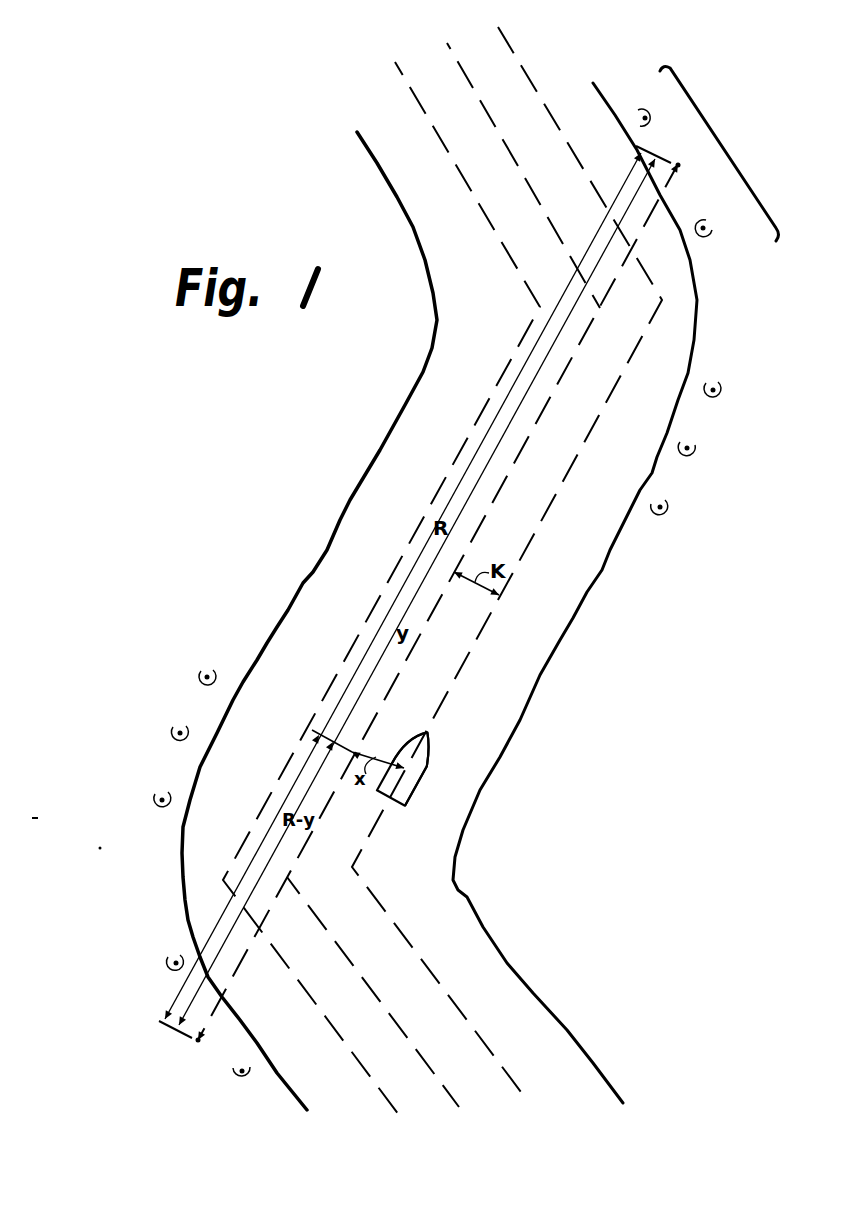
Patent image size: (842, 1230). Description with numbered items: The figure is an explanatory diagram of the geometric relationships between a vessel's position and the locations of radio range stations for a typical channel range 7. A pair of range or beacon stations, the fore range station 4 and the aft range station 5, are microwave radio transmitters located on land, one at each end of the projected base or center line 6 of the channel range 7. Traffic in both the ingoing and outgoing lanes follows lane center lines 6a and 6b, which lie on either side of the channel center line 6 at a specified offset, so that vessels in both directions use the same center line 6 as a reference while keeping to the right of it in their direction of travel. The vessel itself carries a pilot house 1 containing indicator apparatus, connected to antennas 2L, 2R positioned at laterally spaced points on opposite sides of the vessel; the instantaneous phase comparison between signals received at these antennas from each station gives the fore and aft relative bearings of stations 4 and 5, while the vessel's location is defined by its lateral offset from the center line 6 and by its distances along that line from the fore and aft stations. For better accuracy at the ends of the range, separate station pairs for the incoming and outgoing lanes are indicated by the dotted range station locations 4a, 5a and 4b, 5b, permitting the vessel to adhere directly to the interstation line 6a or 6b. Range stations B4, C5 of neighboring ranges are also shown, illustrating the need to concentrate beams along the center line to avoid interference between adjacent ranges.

The pilot house 1 is at (418, 754).
The left antenna 2L is at (395, 762).
The right antenna 2R is at (422, 778).
The fore range station 4 is at (669, 160).
The dotted range station location 4a is at (638, 110).
The dotted range station location 4b is at (712, 230).
The aft range station 5 is at (207, 1045).
The dotted range station location 5a is at (168, 957).
The dotted range station location 5b is at (233, 1068).
The channel center line 6 is at (537, 424).
The lane center line 6a is at (502, 382).
The lane center line 6b is at (586, 444).
The channel range 7 is at (708, 126).
The range station B4 is at (173, 727).
The range station C5 is at (695, 445).